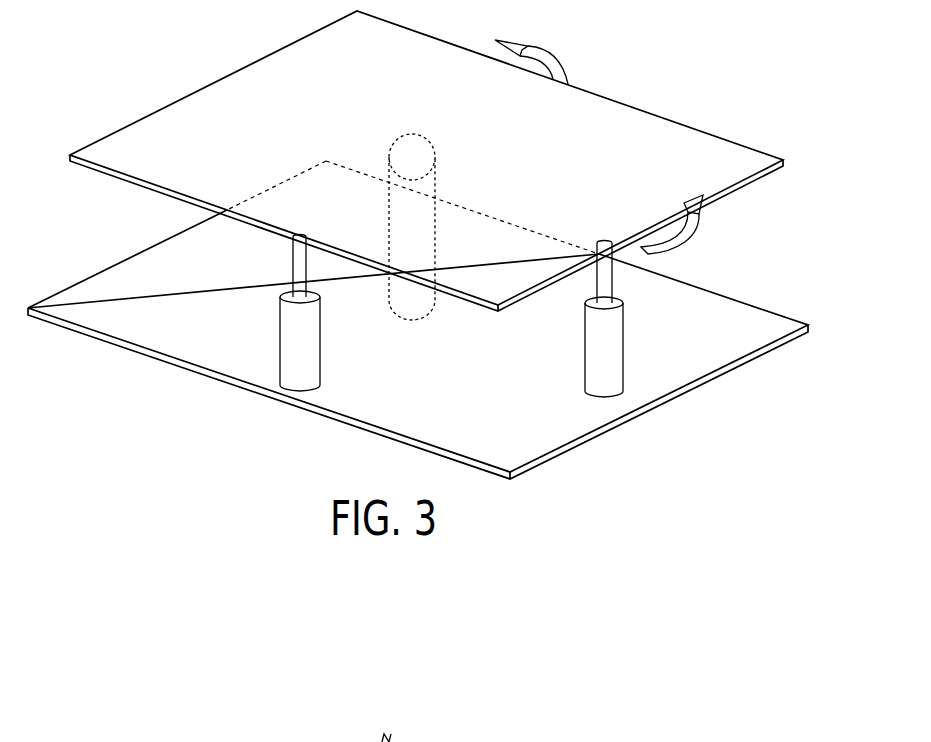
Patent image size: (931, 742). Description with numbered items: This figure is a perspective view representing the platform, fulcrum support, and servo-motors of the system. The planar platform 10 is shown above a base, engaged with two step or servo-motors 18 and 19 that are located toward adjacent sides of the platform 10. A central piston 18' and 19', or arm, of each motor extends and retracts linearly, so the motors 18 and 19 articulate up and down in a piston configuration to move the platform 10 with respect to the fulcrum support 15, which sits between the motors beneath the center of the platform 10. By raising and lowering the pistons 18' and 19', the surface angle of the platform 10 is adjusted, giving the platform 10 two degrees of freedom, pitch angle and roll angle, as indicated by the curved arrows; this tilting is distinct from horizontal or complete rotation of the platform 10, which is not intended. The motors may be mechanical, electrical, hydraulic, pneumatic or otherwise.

The platform 10 is at (382, 85).
The fulcrum support 15 is at (413, 307).
The step or servo-motor 18 is at (624, 347).
The central piston 18' is at (632, 274).
The step or servo-motor 19 is at (278, 341).
The central piston 19' is at (271, 266).